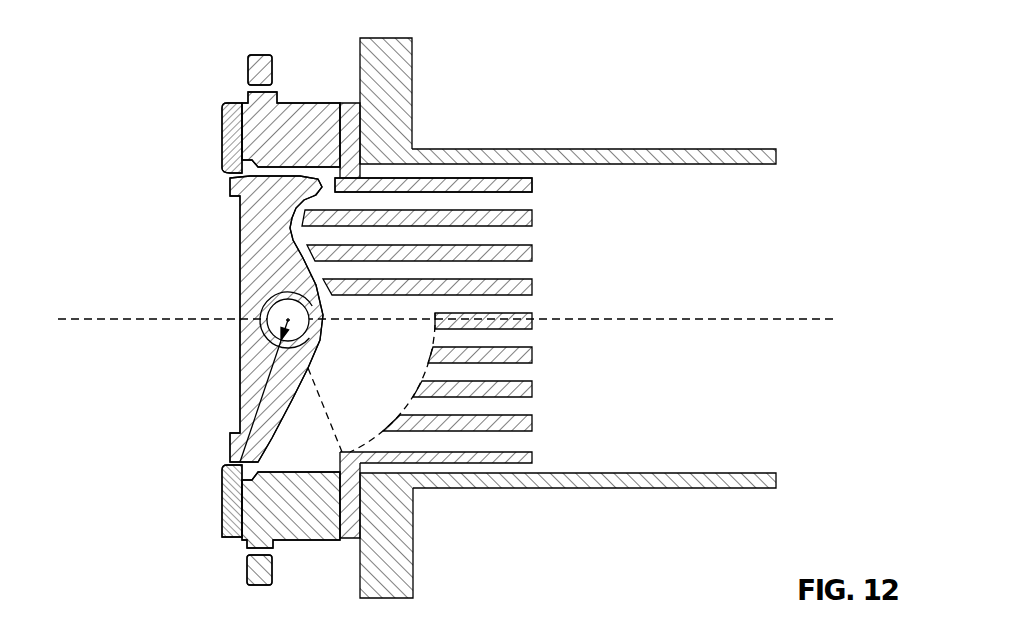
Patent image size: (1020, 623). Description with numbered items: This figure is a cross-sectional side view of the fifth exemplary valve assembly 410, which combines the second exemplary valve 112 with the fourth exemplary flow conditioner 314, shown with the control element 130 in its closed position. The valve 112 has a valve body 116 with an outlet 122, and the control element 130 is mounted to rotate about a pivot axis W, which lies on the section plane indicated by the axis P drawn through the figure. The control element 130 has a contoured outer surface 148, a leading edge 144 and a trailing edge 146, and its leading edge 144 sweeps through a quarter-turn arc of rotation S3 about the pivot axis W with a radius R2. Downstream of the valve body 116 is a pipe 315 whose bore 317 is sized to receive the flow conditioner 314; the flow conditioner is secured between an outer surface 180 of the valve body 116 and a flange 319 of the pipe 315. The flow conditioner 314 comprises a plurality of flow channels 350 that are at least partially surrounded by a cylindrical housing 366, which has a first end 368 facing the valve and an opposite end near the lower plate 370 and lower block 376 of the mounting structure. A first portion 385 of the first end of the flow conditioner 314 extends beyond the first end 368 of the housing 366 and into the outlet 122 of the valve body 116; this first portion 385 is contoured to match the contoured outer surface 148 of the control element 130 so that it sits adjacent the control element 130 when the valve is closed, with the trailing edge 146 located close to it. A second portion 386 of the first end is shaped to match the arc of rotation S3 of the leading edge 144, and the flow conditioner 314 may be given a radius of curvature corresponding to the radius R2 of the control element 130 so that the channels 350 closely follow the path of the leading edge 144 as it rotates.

The second exemplary valve 112 is at (190, 143).
The valve body 116 is at (253, 120).
The outlet 122 is at (333, 176).
The outer surface 180 is at (353, 118).
The flange 319 is at (396, 70).
The cylindrical housing 366 is at (427, 186).
The fourth exemplary flow conditioner 314 is at (480, 186).
The plurality of flow channels 350 is at (492, 202).
The downstream pipe 315 is at (665, 160).
The bore 317 is at (729, 166).
The fifth exemplary valve assembly 410 is at (730, 42).
The trailing edge 146 is at (253, 174).
The first portion of the first end 385 is at (290, 227).
The contoured outer surface 148 is at (290, 221).
The control element 130 is at (262, 278).
The pivot axis W is at (272, 292).
The radius R2 is at (262, 395).
The leading edge 144 is at (237, 465).
The second portion 386 is at (415, 390).
The lower base plate 370 is at (532, 455).
The arc of rotation S3 is at (352, 452).
The lower block 376 is at (400, 578).
The first end of the cylindrical housing 368 is at (348, 540).
The axis P is at (43, 319).